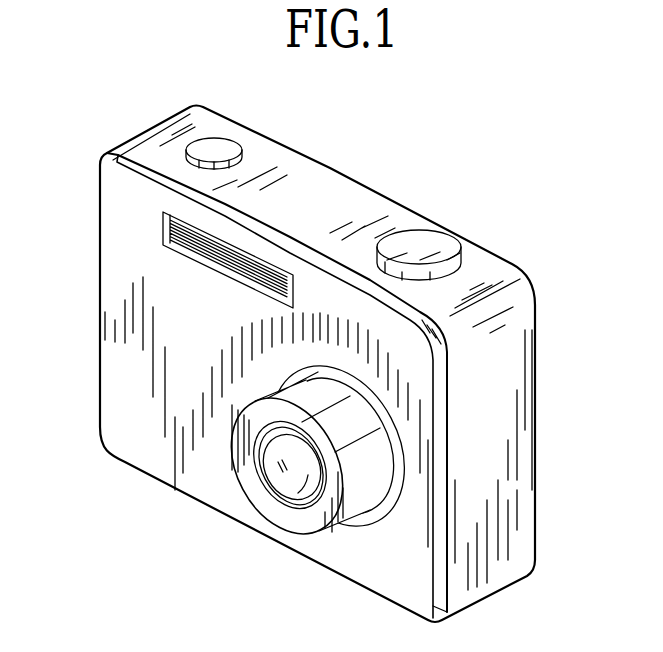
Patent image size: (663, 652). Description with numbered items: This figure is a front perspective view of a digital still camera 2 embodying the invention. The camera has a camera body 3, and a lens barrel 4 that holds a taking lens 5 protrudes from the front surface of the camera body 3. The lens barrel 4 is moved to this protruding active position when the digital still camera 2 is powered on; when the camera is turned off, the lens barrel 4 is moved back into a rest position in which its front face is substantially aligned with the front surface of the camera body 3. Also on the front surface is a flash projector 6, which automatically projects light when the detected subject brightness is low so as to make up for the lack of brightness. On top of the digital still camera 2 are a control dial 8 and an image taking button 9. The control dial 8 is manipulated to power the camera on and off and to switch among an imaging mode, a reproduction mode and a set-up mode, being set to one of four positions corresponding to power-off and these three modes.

The digital still camera 2 is at (546, 247).
The camera body 3 is at (137, 357).
The lens barrel 4 is at (363, 495).
The taking lens 5 is at (298, 478).
The flash projector 6 is at (163, 228).
The control dial 8 is at (216, 146).
The image taking button 9 is at (420, 256).